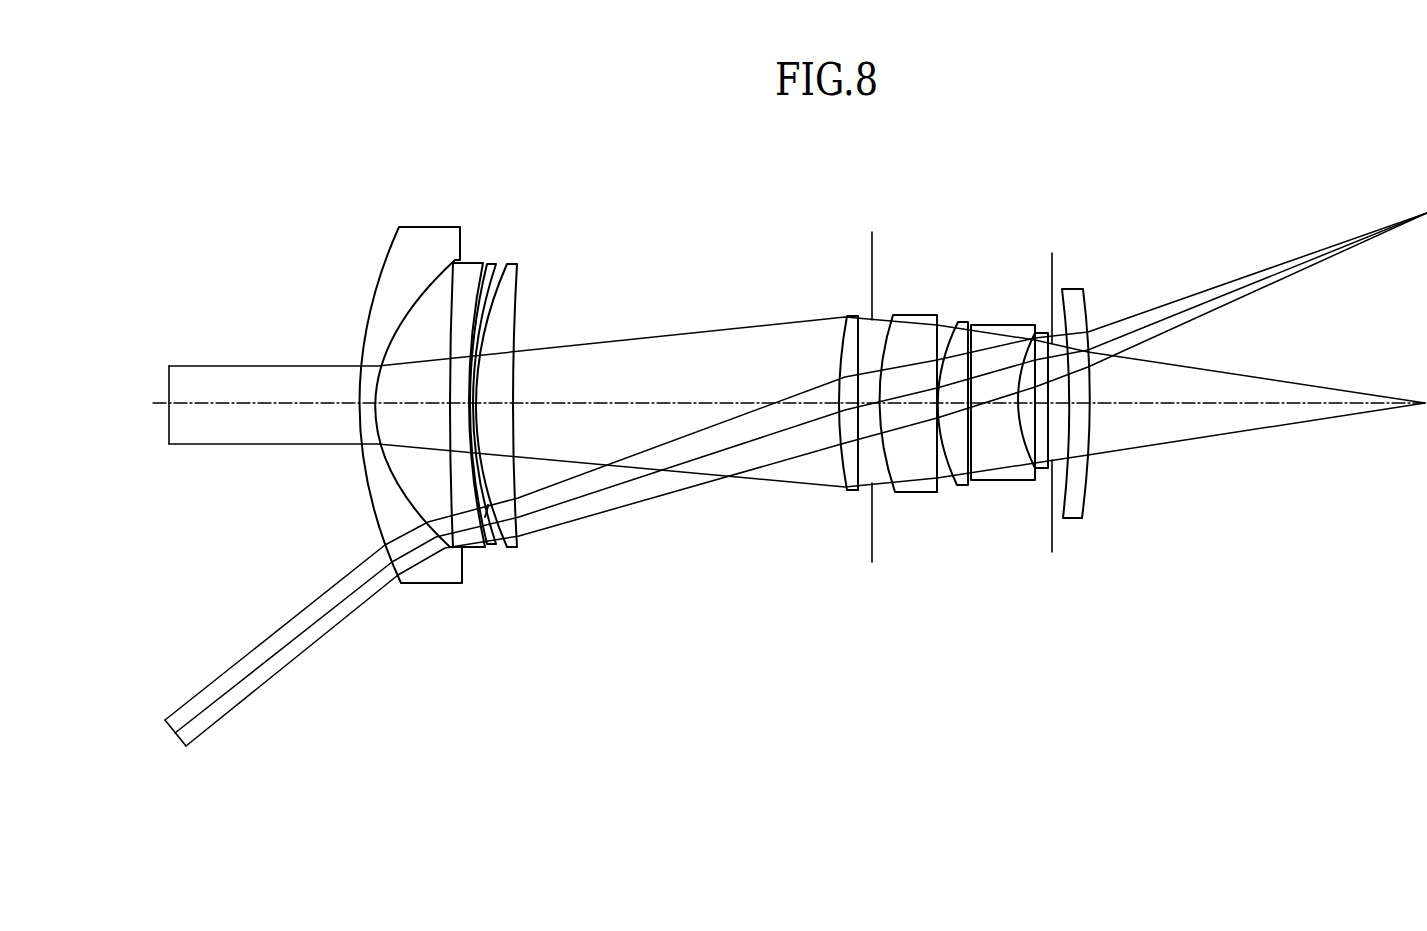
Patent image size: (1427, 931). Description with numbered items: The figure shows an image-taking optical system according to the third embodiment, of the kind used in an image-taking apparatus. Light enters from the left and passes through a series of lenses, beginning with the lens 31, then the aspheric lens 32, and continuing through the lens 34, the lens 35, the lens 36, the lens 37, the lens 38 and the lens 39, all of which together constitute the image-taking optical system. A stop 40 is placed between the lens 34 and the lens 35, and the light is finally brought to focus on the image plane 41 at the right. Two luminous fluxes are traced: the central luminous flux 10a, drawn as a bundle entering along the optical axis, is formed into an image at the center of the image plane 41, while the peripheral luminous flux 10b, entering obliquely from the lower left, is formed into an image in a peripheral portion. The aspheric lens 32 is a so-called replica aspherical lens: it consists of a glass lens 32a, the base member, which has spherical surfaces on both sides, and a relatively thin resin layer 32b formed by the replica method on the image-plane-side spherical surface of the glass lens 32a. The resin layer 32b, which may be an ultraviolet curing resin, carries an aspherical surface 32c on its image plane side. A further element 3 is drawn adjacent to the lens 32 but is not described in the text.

The lens 3 is at (510, 265).
The central luminous flux 10a is at (160, 366).
The peripheral luminous flux 10b is at (771, 497).
The lens 31 is at (423, 233).
The aspheric lens 32 is at (542, 162).
The glass lens 32a is at (475, 265).
The resin layer 32b is at (488, 267).
The aspherical surface 32c is at (485, 517).
The lens 34 is at (852, 316).
The lens 35 is at (920, 316).
The lens 36 is at (962, 322).
The lens 37 is at (1003, 325).
The lens 38 is at (1038, 333).
The lens 39 is at (1075, 289).
The stop 40 is at (872, 562).
The image plane 41 is at (1426, 533).